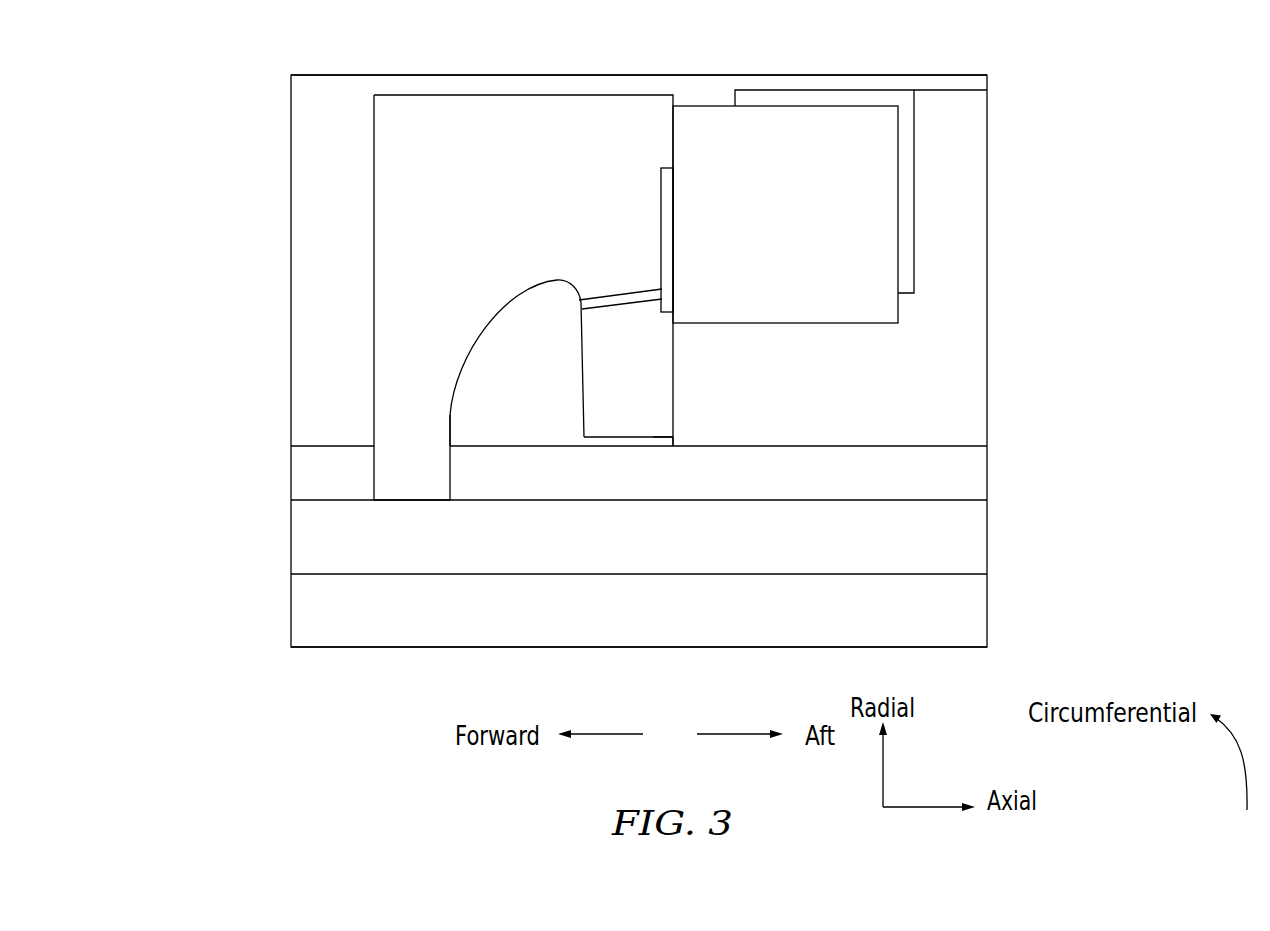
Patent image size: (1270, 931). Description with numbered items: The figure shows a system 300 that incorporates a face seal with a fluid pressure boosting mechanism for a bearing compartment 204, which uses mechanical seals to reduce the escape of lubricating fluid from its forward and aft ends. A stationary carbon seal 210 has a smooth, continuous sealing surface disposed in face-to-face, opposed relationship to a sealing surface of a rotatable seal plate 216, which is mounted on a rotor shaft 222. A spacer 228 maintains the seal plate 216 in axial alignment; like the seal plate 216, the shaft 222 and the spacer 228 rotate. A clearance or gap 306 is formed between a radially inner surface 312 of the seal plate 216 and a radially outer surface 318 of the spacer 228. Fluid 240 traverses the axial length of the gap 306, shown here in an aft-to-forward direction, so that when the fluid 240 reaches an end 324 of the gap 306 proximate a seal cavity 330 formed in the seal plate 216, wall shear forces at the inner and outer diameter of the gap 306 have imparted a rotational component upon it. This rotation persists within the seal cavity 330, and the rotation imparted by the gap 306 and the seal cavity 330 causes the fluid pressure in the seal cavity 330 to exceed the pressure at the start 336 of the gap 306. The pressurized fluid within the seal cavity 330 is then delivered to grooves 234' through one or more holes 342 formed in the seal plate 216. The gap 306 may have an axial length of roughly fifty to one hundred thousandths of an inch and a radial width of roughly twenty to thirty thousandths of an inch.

The system 300 is at (1109, 108).
The bearing compartment 204 is at (327, 113).
The seal plate 216 is at (423, 227).
The seal cavity 330 is at (543, 401).
The holes 342 is at (610, 300).
The grooves 234' is at (729, 240).
The carbon seal 210 is at (873, 188).
The fluid 240 is at (938, 391).
The radially inner surface of the seal plate 312 is at (613, 440).
The gap 306 is at (654, 439).
The end of the gap 324 is at (584, 447).
The start of the gap 336 is at (673, 447).
The radially outer surface of the spacer 318 is at (907, 447).
The rotor shaft 222 is at (317, 533).
The spacer 228 is at (867, 482).